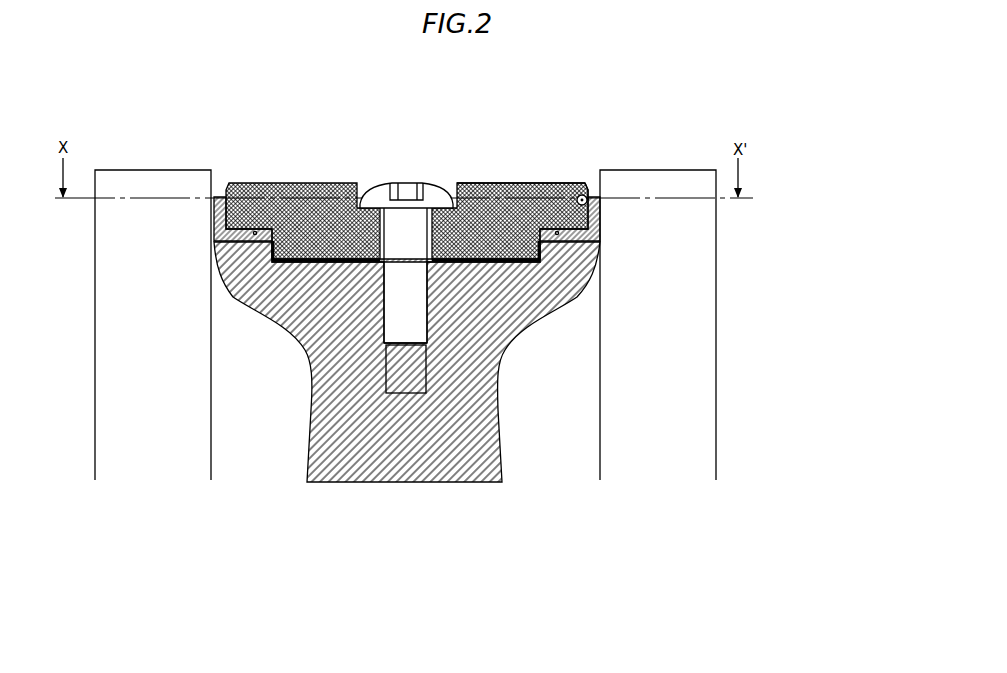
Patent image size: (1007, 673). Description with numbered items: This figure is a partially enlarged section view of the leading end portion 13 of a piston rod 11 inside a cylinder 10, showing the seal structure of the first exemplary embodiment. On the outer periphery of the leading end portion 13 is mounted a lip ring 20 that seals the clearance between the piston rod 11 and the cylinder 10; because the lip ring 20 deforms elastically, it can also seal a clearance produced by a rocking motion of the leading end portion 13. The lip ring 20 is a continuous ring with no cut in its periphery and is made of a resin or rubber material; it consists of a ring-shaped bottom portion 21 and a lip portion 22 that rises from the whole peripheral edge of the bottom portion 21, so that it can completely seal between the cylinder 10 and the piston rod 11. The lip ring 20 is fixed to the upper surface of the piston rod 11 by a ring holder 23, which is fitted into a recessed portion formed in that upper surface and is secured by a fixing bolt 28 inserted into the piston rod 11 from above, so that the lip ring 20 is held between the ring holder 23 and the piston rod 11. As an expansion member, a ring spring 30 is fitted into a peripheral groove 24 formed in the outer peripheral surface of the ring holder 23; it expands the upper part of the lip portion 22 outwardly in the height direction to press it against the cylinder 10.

The cylinder 10 is at (678, 303).
The piston rod 11 is at (407, 422).
The leading end portion 13 is at (500, 318).
The lip ring 20 is at (538, 193).
The ring-shaped bottom portion 21 is at (578, 241).
The lip portion 22 is at (589, 212).
The ring holder 23 is at (488, 185).
The peripheral groove 24 is at (568, 185).
The fixing bolt 28 is at (430, 193).
The ring spring 30 is at (584, 196).